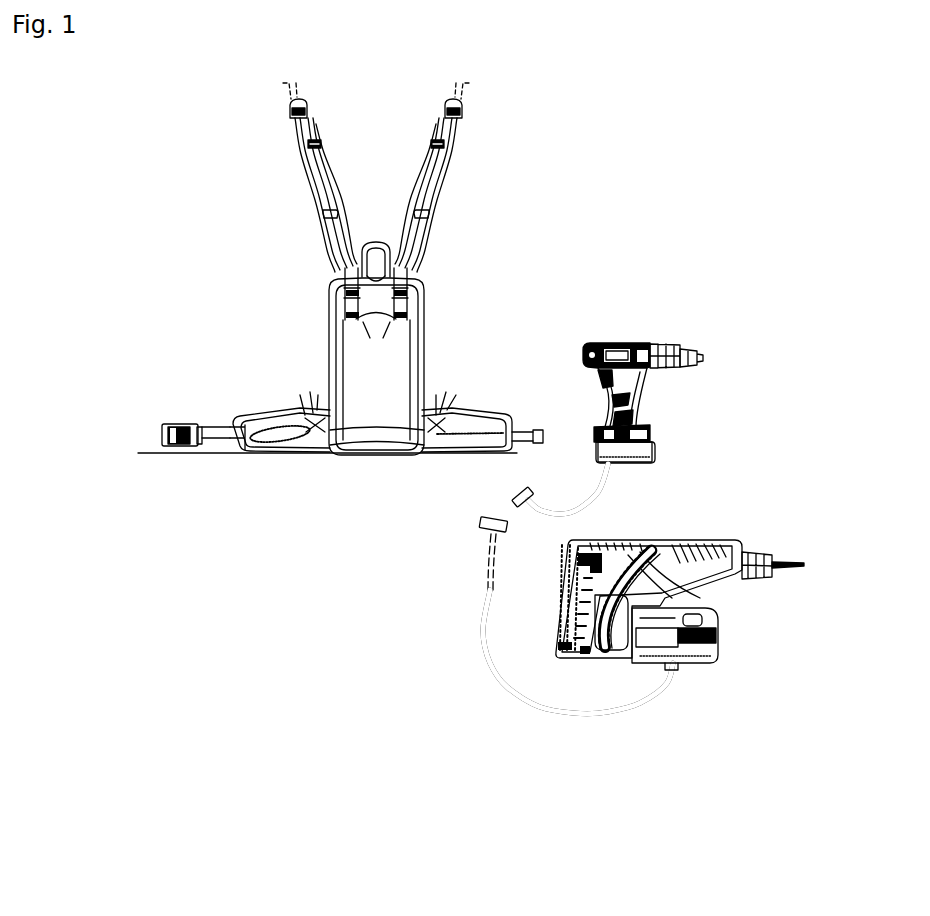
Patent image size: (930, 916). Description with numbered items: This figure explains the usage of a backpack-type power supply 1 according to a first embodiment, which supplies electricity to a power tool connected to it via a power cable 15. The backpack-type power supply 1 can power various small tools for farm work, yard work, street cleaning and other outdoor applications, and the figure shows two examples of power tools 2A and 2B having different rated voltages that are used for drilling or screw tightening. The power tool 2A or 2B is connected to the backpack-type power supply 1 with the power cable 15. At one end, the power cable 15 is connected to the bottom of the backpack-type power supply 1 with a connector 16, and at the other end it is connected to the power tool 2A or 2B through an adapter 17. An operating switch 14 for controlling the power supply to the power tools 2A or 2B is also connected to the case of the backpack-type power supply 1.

The backpack-type power supply 1 is at (550, 126).
The power tool 2A is at (640, 340).
The power tool 2B is at (712, 545).
The operating switch 14 is at (186, 426).
The power cable 15 is at (592, 502).
The connector 16 is at (518, 495).
The adapter 17 is at (656, 447).